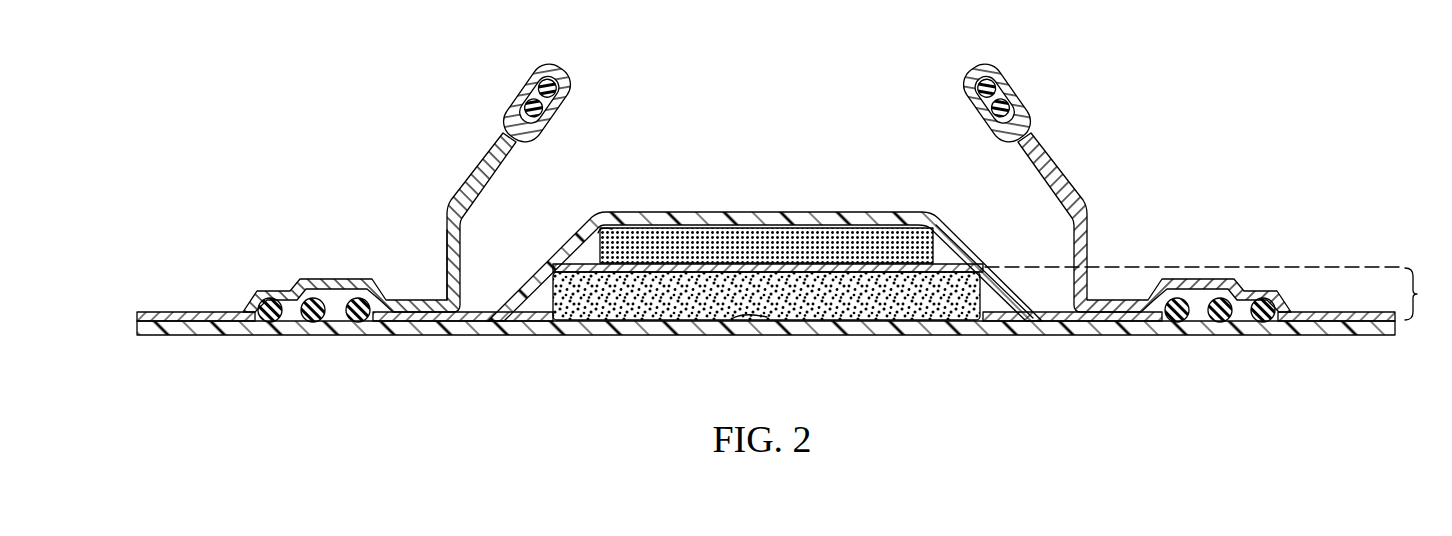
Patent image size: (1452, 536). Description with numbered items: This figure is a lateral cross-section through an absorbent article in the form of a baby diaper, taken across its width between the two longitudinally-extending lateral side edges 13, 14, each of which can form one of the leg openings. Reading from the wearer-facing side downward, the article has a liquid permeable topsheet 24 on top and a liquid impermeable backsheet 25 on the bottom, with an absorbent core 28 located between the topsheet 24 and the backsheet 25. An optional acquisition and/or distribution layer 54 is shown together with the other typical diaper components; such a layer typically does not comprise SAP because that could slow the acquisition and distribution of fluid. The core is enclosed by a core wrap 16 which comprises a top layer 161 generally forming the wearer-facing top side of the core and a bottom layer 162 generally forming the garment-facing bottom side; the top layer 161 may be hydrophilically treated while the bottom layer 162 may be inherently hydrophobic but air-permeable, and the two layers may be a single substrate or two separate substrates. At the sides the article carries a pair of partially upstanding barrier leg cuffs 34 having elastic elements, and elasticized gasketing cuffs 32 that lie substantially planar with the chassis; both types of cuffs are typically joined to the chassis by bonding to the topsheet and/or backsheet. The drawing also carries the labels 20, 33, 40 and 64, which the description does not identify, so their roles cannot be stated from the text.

The lateral side edge 13 is at (137, 323).
The lateral side edge 14 is at (1395, 333).
The core wrap 16 is at (766, 279).
The top layer 161 is at (960, 265).
The bottom layer 162 is at (590, 321).
The assembly 20 is at (826, 128).
The liquid permeable topsheet 24 is at (822, 212).
The liquid impermeable backsheet 25 is at (497, 336).
The absorbent core 28 is at (1428, 294).
The elasticized gasketing cuffs 32 is at (1226, 260).
The rings 33 is at (1172, 322).
The barrier leg cuffs 34 is at (410, 184).
The block 40 is at (915, 320).
The acquisition and/or distribution layer 54 is at (889, 234).
The arm leg 64 is at (462, 262).